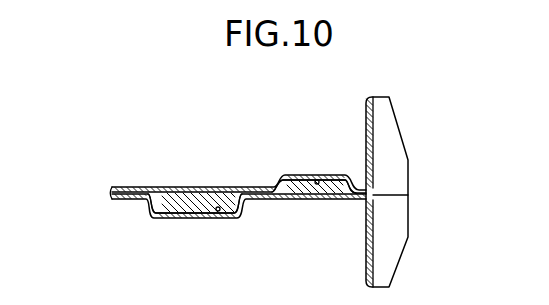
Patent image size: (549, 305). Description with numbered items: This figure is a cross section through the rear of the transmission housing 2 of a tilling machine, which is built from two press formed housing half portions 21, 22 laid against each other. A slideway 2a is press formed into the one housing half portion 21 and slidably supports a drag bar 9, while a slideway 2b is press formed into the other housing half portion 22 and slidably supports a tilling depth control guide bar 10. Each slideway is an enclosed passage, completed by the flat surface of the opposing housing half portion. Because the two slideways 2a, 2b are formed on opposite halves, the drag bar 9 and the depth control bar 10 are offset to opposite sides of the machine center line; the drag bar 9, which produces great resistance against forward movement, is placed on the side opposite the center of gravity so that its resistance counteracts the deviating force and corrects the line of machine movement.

The transmission housing 2 is at (238, 197).
The press formed housing half portion 21 is at (138, 204).
The press formed housing half portion 22 is at (248, 186).
The slideway 2a is at (211, 219).
The slideway 2b is at (325, 177).
The drag bar 9 is at (200, 216).
The tilling depth control guide bar 10 is at (300, 179).